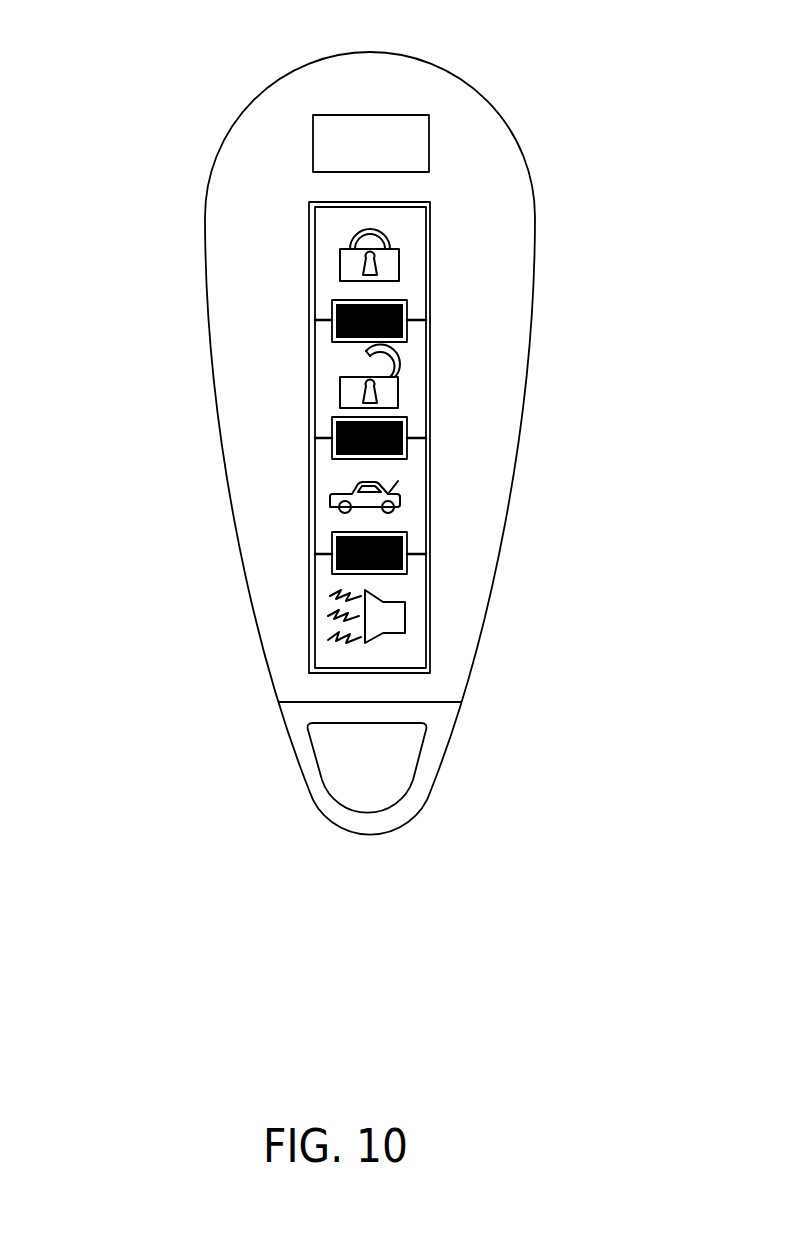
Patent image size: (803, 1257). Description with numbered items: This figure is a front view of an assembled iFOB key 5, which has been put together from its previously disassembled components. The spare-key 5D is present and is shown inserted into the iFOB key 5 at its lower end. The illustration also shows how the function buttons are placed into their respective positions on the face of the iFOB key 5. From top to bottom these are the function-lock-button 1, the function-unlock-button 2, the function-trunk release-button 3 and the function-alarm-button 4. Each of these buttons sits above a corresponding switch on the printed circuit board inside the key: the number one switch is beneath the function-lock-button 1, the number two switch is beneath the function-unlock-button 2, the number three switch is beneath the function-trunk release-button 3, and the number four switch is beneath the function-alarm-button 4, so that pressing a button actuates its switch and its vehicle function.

The function-lock-button 1 is at (415, 218).
The function-unlock-button 2 is at (323, 337).
The function-trunk release-button 3 is at (419, 452).
The function-alarm-button 4 is at (323, 582).
The iFOB key 5 is at (233, 170).
The spare-key 5D is at (325, 813).